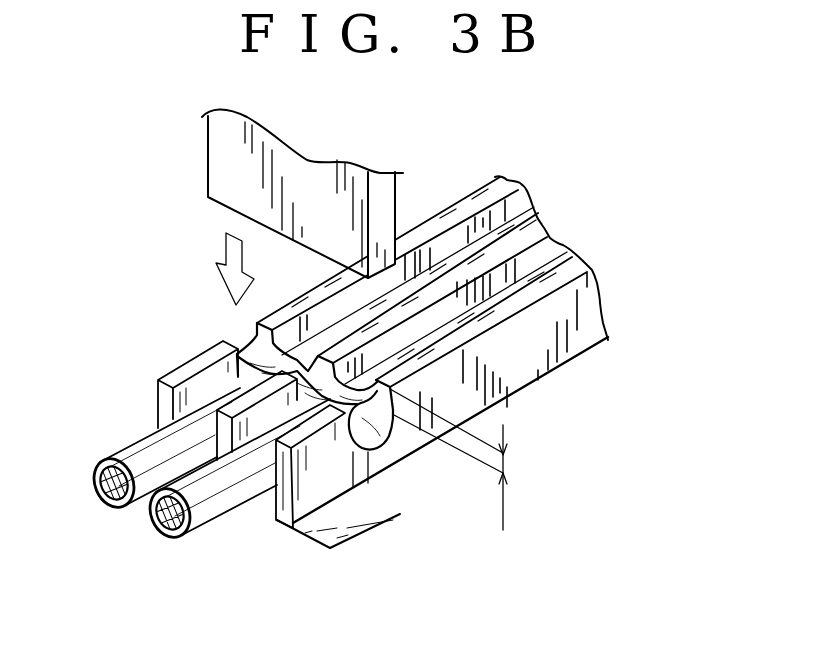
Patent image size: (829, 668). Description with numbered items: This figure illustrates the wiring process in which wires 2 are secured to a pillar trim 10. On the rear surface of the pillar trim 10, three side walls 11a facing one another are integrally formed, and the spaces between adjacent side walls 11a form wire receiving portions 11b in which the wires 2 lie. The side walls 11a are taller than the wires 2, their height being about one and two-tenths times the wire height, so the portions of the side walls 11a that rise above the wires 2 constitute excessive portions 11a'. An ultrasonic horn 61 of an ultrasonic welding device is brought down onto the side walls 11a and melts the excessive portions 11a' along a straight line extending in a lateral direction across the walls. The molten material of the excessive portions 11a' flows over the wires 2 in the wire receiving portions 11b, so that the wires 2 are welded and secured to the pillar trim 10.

The ultrasonic horn 61 is at (226, 162).
The pillar trim 10 is at (362, 487).
The side walls 11a is at (329, 313).
The wire receiving portions 11b is at (242, 400).
The excessive portions 11a' is at (518, 459).
The wires 2 is at (160, 520).